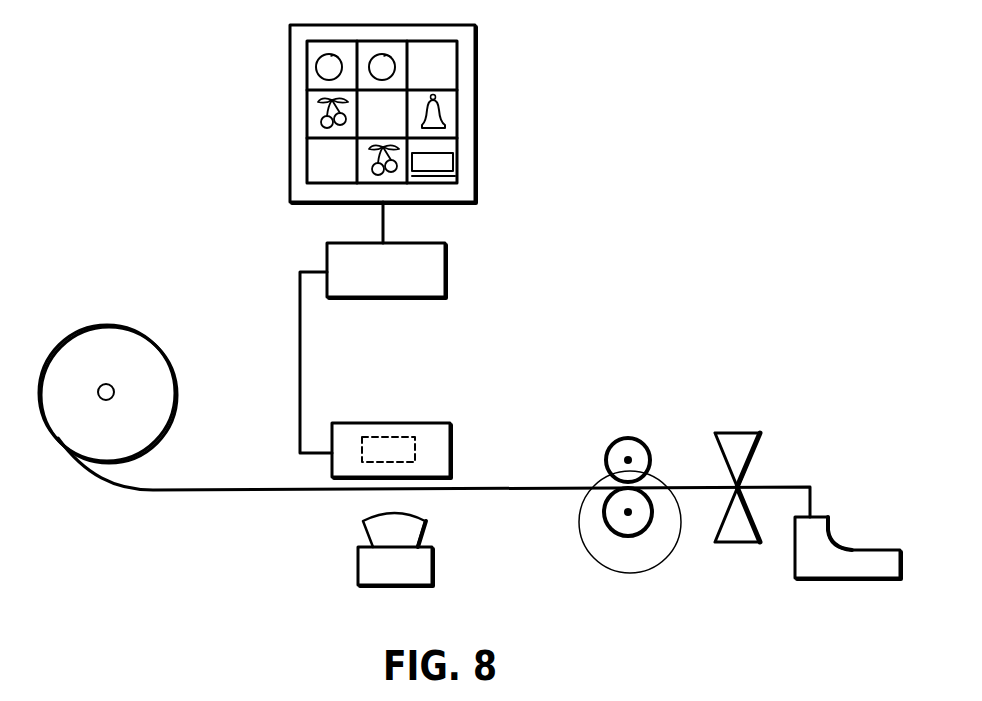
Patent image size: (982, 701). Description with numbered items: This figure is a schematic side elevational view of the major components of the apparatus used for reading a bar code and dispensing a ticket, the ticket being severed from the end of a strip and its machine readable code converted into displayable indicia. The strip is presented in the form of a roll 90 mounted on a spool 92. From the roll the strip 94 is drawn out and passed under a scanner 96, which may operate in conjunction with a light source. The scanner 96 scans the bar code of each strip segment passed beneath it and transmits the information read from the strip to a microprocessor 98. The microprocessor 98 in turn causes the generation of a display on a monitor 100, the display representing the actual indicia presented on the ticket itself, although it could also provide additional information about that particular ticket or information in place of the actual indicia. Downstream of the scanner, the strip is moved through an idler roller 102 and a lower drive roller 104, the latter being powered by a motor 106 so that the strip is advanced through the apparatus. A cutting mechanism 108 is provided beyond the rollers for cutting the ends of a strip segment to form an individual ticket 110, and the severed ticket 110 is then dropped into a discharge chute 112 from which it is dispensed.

The roll 90 is at (147, 384).
The spool 92 is at (107, 384).
The strip 94 is at (190, 493).
The scanner 96 is at (450, 438).
The microprocessor 98 is at (445, 267).
The monitor 100 is at (475, 99).
The idler roller 102 is at (625, 453).
The lower drive roller 104 is at (622, 517).
The motor 106 is at (630, 572).
The cutting mechanism 108 is at (740, 423).
The ticket 110 is at (815, 562).
The discharge chute 112 is at (852, 545).